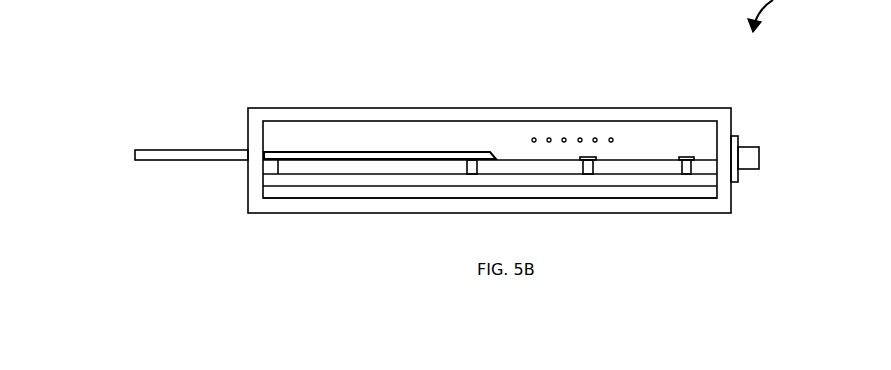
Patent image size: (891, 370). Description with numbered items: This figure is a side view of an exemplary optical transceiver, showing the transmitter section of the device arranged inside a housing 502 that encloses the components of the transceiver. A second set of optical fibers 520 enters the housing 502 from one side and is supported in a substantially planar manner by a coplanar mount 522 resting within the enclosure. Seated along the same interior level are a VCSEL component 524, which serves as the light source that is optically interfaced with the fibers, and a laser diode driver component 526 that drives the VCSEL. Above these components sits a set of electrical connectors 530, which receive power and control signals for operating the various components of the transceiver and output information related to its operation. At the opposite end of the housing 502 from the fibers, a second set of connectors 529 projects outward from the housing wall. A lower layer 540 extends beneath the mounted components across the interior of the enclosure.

The housing 502 is at (263, 108).
The second set of optical fibers 520 is at (159, 151).
The coplanar mount 522 is at (378, 168).
The VCSEL component 524 is at (515, 168).
The laser diode driver component 526 is at (628, 168).
The second set of connectors 529 is at (753, 149).
The set of electrical connectors 530 is at (613, 132).
The base substrate 540 is at (418, 180).